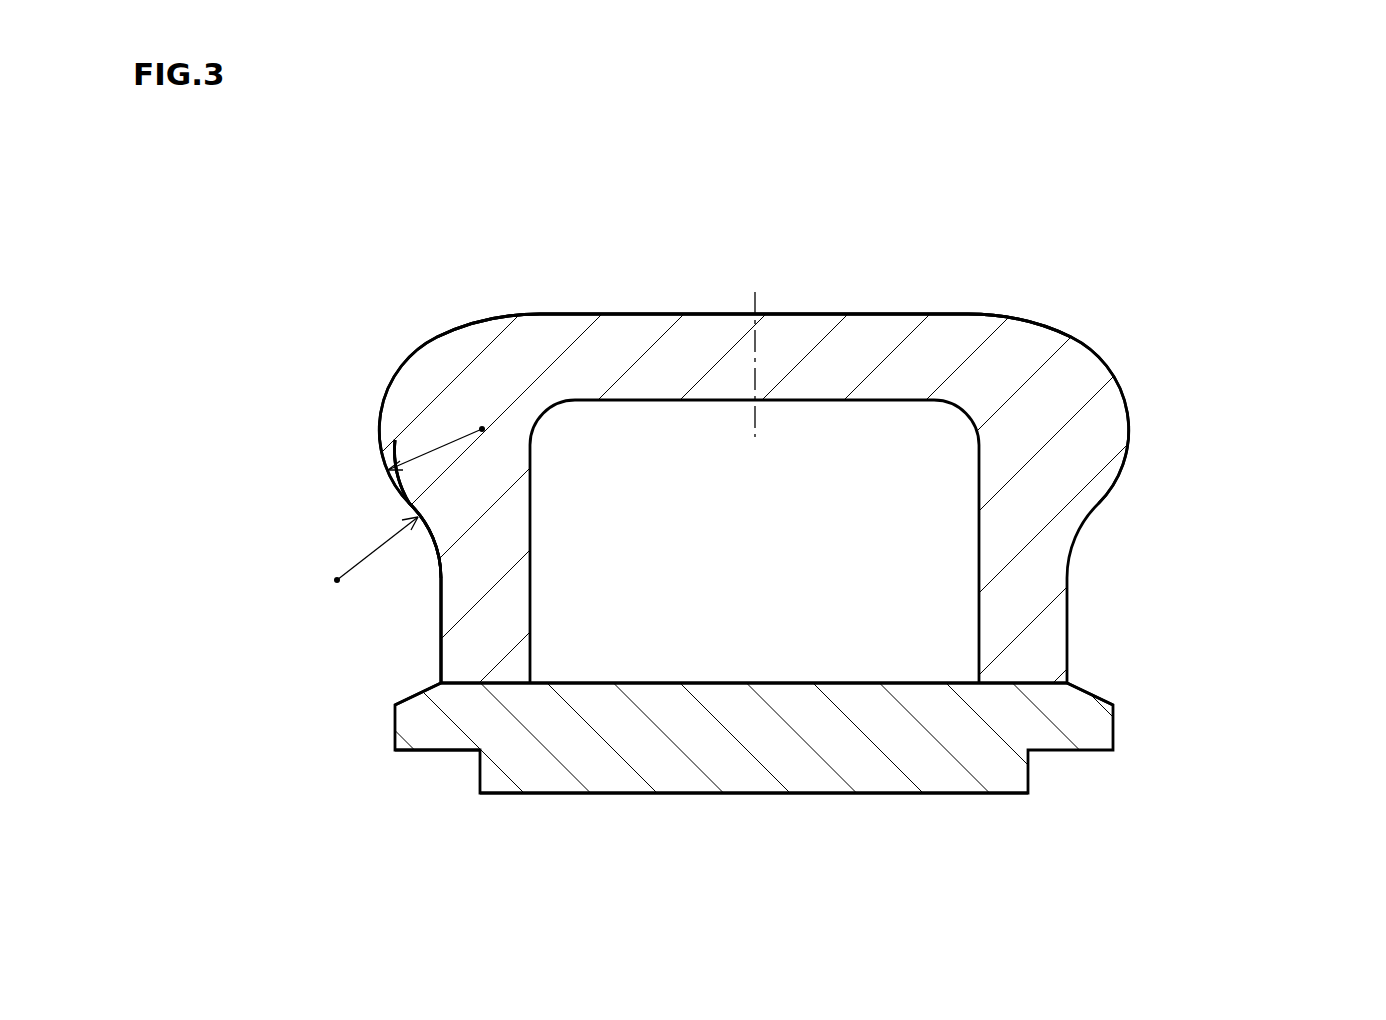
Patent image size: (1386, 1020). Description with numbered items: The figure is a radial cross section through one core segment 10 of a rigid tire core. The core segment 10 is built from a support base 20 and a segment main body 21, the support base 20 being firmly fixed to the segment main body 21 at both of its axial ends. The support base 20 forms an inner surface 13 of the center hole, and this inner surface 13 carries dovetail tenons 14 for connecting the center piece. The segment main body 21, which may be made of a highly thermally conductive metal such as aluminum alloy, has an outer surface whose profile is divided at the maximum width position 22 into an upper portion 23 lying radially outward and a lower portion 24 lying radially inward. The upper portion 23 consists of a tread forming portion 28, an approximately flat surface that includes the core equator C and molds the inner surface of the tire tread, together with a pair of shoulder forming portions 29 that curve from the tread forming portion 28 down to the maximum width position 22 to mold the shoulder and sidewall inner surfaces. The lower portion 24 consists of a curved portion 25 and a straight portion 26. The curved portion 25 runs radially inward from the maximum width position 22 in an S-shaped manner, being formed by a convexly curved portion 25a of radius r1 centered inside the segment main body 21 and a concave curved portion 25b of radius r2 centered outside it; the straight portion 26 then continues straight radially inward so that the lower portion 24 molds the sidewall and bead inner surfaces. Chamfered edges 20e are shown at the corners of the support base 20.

The core segment 10 is at (693, 553).
The inner surface 13 is at (442, 750).
The dovetail tenons 14 is at (753, 795).
The support base 20 is at (1123, 722).
The chamfered edge of flange 20e is at (413, 690).
The segment main body 21 is at (1115, 488).
The maximum width position 22 is at (377, 422).
The upper portion 23 is at (761, 233).
The lower portion 24 is at (296, 561).
The curved portion 25 is at (325, 517).
The convexly curved portion 25a is at (400, 500).
The concave curved portion 25b is at (436, 540).
The straight portion 26 is at (441, 623).
The tread forming portion 28 is at (697, 314).
The shoulder forming portions 29 is at (440, 333).
The radius of convexly curved portion r1 is at (436, 445).
The radius of concave curved portion r2 is at (376, 550).
The core equator C is at (755, 351).